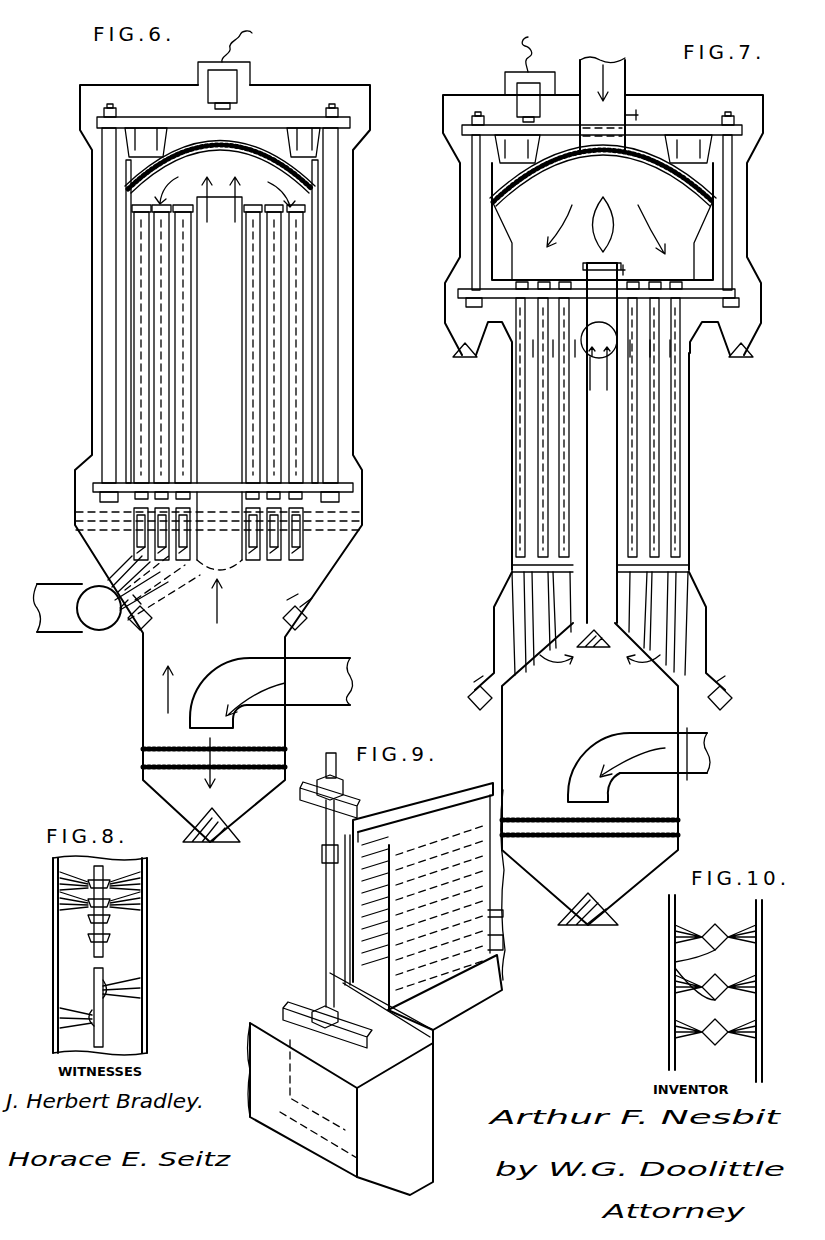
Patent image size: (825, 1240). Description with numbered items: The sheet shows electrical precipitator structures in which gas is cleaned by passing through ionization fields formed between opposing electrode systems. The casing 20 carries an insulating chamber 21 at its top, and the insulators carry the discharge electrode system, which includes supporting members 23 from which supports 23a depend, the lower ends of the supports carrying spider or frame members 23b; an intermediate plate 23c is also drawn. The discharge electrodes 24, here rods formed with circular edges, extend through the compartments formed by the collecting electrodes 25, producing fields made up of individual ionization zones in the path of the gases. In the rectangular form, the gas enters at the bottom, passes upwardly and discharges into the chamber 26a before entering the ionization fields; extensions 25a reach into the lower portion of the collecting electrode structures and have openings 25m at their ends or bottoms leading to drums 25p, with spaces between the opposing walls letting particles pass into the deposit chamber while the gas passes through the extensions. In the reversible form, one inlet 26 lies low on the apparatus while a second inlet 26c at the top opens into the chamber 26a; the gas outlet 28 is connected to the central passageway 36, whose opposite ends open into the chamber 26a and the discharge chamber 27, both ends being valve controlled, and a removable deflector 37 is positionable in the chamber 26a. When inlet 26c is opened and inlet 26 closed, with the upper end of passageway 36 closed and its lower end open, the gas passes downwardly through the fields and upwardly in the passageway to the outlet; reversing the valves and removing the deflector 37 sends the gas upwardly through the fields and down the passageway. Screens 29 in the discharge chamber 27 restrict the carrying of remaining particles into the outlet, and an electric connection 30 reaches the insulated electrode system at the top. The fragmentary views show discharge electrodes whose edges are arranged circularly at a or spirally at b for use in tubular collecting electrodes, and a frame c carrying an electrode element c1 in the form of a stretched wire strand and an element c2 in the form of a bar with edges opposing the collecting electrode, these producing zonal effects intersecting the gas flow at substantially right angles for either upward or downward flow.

In FIG. 6, the casing 20 is at (348, 283).
In FIG. 7, the casing 20 is at (762, 318).
In FIG. 6, the insulating chamber 21 is at (292, 100).
In FIG. 7, the insulating chamber 21 is at (680, 113).
In FIG. 6, the supporting members 23 is at (350, 130).
In FIG. 7, the supporting members 23 is at (742, 130).
In FIG. 6, the supports 23a is at (336, 328).
In FIG. 7, the supports 23a is at (732, 222).
In FIG. 6, the members 23b is at (354, 490).
In FIG. 9, the members 23b is at (293, 1004).
In FIG. 7, the intermediate plate 23c is at (735, 297).
In FIG. 9, the intermediate plate 23c is at (306, 804).
In FIG. 6, the discharge electrodes 24 is at (187, 328).
In FIG. 7, the discharge electrodes 24 is at (562, 410).
In FIG. 8, the discharge electrodes 24 is at (92, 929).
In FIG. 6, the collecting electrodes 25 is at (172, 387).
In FIG. 7, the collecting electrodes 25 is at (550, 472).
In FIG. 8, the collecting electrodes 25 is at (135, 952).
In FIG. 9, the collecting electrodes 25 is at (463, 776).
In FIG. 10, the collecting electrodes 25 is at (745, 963).
In FIG. 6, the extensions 25a is at (353, 524).
In FIG. 7, the extensions 25a is at (513, 618).
In FIG. 6, the openings 25m is at (132, 540).
In FIG. 6, the drums 25p is at (92, 634).
In FIG. 6, the inlet 26 is at (355, 687).
In FIG. 7, the inlet 26 is at (703, 758).
In FIG. 6, the chamber 26a is at (220, 182).
In FIG. 7, the chamber 26a is at (603, 212).
In FIG. 7, the inlet 26c is at (615, 62).
In FIG. 6, the discharge chamber 27 is at (202, 492).
In FIG. 7, the discharge chamber 27 is at (600, 774).
In FIG. 7, the gas outlet 28 is at (599, 340).
In FIG. 6, the screens 29 is at (150, 760).
In FIG. 7, the screens 29 is at (672, 834).
In FIG. 6, the electric connection 30 is at (250, 33).
In FIG. 7, the electric connection 30 is at (517, 46).
In FIG. 7, the central passageway 36 is at (604, 443).
In FIG. 7, the removable deflector 37 is at (608, 216).
In FIG. 8, the circularly arranged edges a is at (113, 938).
In FIG. 8, the spirally arranged edges b is at (105, 1029).
In FIG. 9, the frame c is at (348, 913).
In FIG. 9, the electrode element c1 is at (368, 929).
In FIG. 9, the electrode element c2 is at (372, 884).
In FIG. 10, the electrode element c2 is at (670, 962).